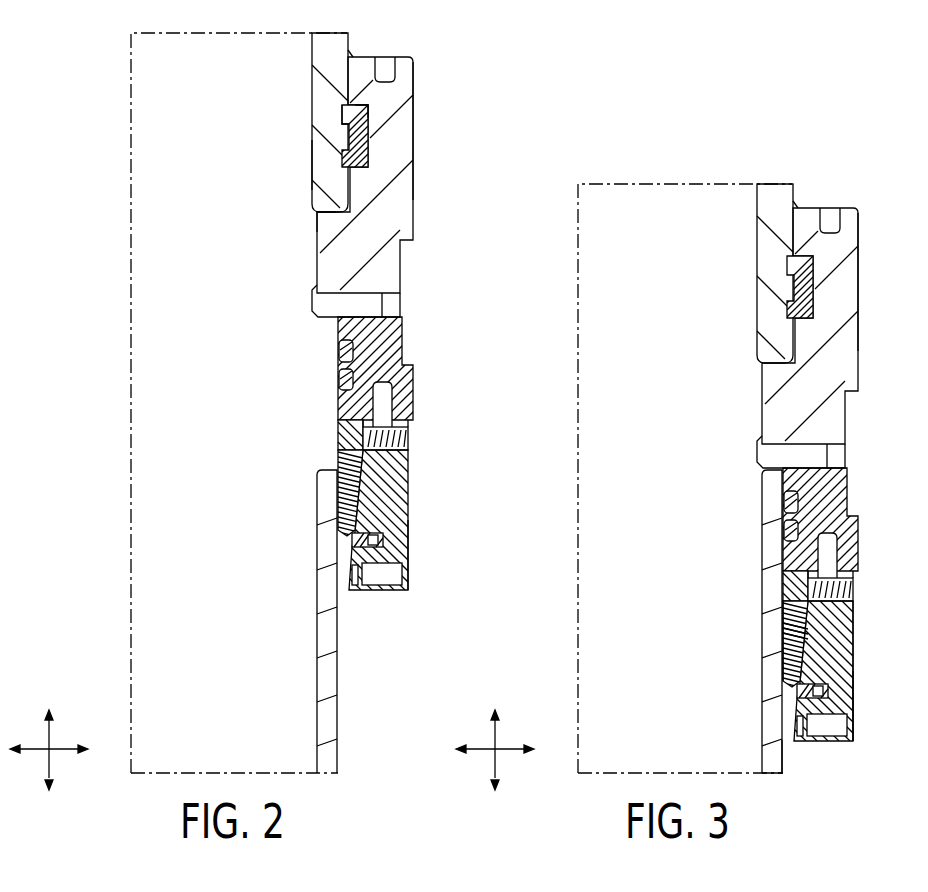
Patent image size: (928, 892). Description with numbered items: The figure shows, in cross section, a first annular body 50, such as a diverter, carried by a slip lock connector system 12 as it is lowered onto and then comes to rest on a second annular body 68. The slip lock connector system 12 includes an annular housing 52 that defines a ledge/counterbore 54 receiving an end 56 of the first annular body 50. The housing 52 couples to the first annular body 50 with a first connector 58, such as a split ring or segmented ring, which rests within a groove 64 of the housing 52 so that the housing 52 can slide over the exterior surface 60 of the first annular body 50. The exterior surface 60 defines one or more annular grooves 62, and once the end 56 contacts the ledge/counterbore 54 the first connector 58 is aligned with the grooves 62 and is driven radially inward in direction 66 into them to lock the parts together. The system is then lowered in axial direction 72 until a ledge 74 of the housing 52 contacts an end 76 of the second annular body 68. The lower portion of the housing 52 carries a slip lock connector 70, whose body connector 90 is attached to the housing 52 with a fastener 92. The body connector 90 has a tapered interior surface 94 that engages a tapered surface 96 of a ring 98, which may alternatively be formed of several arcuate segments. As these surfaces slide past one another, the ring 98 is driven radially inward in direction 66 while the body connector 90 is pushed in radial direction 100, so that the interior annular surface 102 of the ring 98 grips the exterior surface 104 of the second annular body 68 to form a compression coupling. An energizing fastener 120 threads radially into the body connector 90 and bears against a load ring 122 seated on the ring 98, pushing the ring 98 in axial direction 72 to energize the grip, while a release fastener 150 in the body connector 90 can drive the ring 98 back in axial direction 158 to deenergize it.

In FIG. 2, the slip lock connector system 12 is at (484, 125).
In FIG. 3, the slip lock connector system 12 is at (893, 245).
In FIG. 2, the first annular body 50 is at (335, 50).
In FIG. 3, the first annular body 50 is at (773, 247).
In FIG. 2, the housing 52 is at (398, 205).
In FIG. 3, the housing 52 is at (836, 326).
In FIG. 2, the ledge/counterbore 54 is at (320, 213).
In FIG. 2, the end 56 is at (298, 162).
In FIG. 2, the first connector 58 is at (358, 122).
In FIG. 3, the first connector 58 is at (843, 300).
In FIG. 2, the exterior surface 60 is at (355, 52).
In FIG. 2, the annular grooves 62 is at (345, 125).
In FIG. 2, the groove 64 is at (368, 107).
In FIG. 2, the radially inward direction 66 is at (44, 750).
In FIG. 3, the radially inward direction 66 is at (481, 722).
In FIG. 2, the second annular body 68 is at (340, 705).
In FIG. 3, the second annular body 68 is at (735, 621).
In FIG. 2, the slip lock connector 70 is at (428, 548).
In FIG. 3, the slip lock connector 70 is at (880, 742).
In FIG. 2, the axial direction 72 is at (54, 758).
In FIG. 3, the axial direction 72 is at (507, 788).
In FIG. 2, the ledge 74 is at (335, 320).
In FIG. 2, the end 76 is at (337, 470).
In FIG. 2, the body connector 90 is at (390, 482).
In FIG. 3, the body connector 90 is at (791, 671).
In FIG. 3, the fastener 92 is at (829, 753).
In FIG. 3, the tapered interior surface 94 is at (868, 671).
In FIG. 3, the tapered surface 96 is at (730, 635).
In FIG. 2, the ring 98 is at (347, 487).
In FIG. 3, the ring 98 is at (760, 645).
In FIG. 2, the radial direction 100 is at (58, 747).
In FIG. 3, the radial direction 100 is at (517, 738).
In FIG. 3, the interior annular surface 102 is at (751, 626).
In FIG. 3, the exterior surface 104 is at (792, 779).
In FIG. 2, the energizing fastener 120 is at (395, 438).
In FIG. 3, the energizing fastener 120 is at (863, 587).
In FIG. 2, the load ring 122 is at (348, 437).
In FIG. 3, the load ring 122 is at (754, 583).
In FIG. 2, the release fastener 150 is at (377, 548).
In FIG. 3, the release fastener 150 is at (858, 690).
In FIG. 2, the axial direction 158 is at (52, 742).
In FIG. 3, the axial direction 158 is at (513, 727).